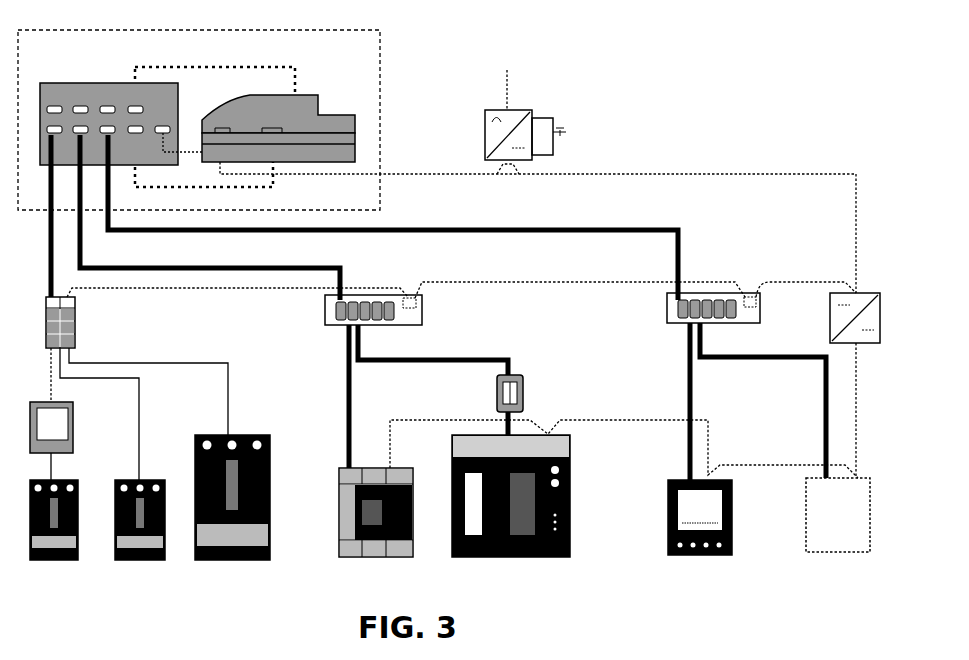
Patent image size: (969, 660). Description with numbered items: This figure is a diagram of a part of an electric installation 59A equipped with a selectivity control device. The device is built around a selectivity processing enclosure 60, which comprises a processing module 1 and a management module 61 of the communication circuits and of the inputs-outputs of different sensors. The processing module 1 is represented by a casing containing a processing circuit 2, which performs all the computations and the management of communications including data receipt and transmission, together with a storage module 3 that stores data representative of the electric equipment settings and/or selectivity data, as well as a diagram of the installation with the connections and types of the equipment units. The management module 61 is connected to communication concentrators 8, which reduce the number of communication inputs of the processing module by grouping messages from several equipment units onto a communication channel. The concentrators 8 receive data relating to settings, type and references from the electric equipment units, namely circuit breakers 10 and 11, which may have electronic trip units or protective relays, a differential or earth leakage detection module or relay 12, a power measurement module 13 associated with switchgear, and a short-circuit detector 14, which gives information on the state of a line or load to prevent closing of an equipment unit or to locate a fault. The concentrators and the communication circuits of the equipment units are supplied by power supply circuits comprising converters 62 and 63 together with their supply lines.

The selectivity processing enclosure 60 is at (385, 65).
The management module 61 is at (52, 83).
The processing module 1 is at (358, 103).
The storage module 3 is at (355, 128).
The processing circuit 2 is at (355, 158).
The converter 62 is at (530, 108).
The installation 59A is at (643, 120).
The communication concentrator module 8 is at (76, 320).
The converter 63 is at (838, 320).
The power measurement module 13 is at (75, 420).
The circuit breaker 10 is at (70, 560).
The circuit breaker 11 is at (207, 560).
The differential or earth leakage detection module or relay 12 is at (733, 495).
The short-circuit detector 14 is at (807, 527).